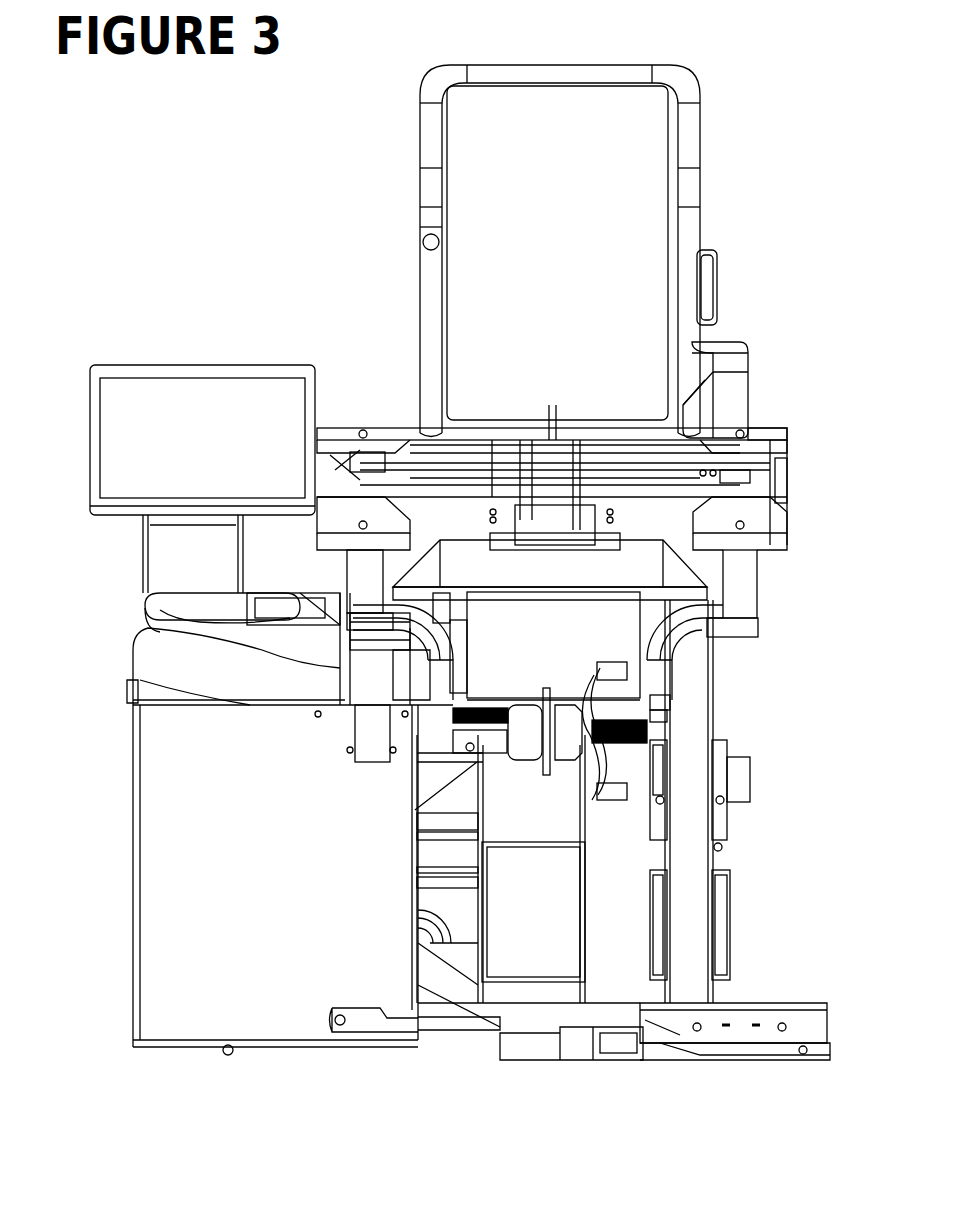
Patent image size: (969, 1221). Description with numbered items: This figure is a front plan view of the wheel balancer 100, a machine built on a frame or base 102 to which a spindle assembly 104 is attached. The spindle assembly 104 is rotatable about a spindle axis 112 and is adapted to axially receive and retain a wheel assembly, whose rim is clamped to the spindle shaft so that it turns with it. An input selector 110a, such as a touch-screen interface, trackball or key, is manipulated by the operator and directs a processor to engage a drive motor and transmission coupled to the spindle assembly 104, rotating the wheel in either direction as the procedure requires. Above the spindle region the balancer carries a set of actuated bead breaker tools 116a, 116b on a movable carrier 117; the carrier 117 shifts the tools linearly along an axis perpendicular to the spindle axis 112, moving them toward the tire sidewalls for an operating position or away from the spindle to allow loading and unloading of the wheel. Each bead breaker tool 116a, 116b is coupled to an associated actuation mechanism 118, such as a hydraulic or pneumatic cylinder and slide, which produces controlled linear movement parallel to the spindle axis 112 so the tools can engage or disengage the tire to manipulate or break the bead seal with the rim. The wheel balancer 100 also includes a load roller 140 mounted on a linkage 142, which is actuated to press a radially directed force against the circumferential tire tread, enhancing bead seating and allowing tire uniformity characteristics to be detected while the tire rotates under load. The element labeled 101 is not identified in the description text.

The wheel balancer 100 is at (272, 216).
The frame 101 is at (620, 217).
The frame or base 102 is at (158, 842).
The spindle assembly 104 is at (528, 749).
The input selector 110a is at (196, 400).
The spindle axis 112 is at (668, 731).
The bead breaker tool 116a is at (742, 600).
The bead breaker tool 116b is at (348, 580).
The movable carrier 117 is at (770, 414).
The actuation mechanism 118 is at (434, 462).
The load roller 140 is at (575, 650).
The linkage 142 is at (545, 884).